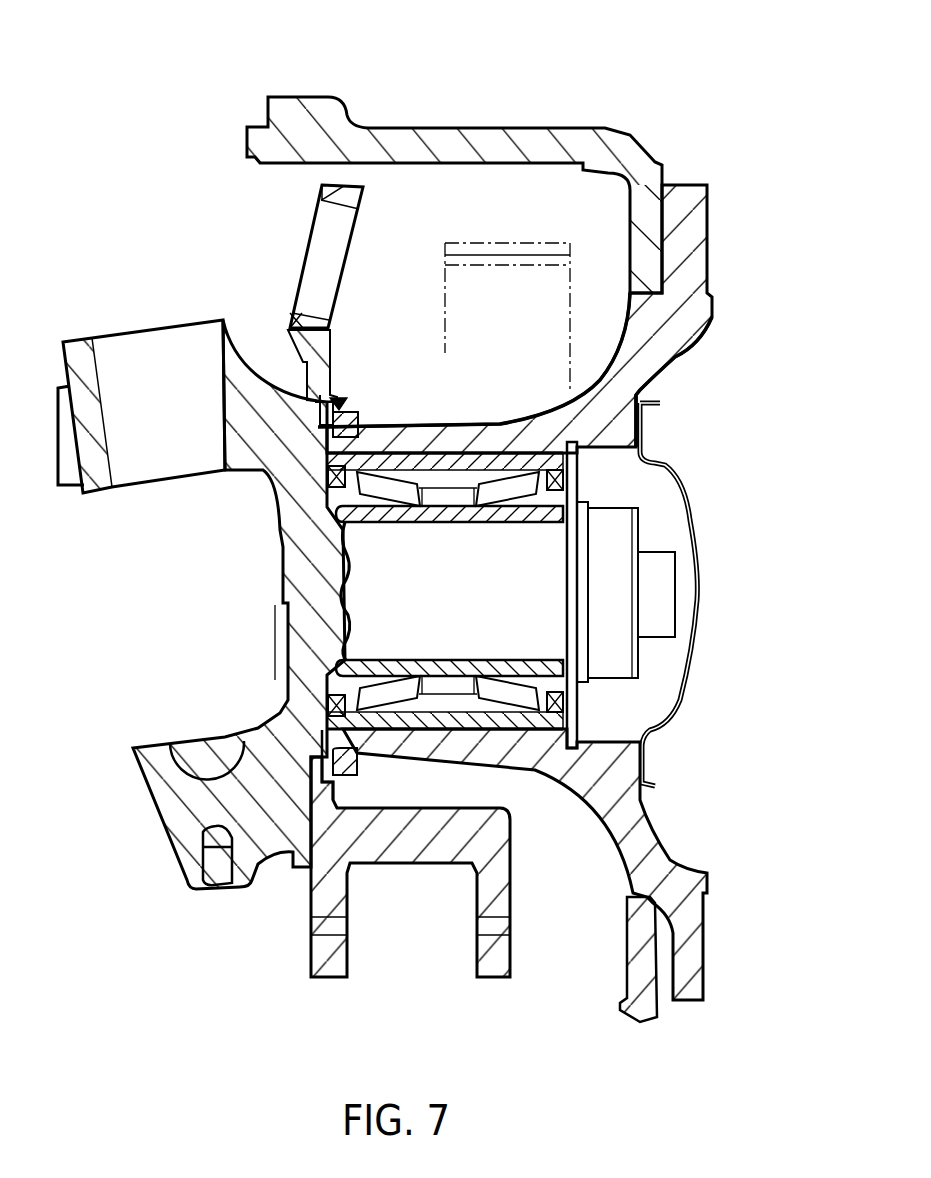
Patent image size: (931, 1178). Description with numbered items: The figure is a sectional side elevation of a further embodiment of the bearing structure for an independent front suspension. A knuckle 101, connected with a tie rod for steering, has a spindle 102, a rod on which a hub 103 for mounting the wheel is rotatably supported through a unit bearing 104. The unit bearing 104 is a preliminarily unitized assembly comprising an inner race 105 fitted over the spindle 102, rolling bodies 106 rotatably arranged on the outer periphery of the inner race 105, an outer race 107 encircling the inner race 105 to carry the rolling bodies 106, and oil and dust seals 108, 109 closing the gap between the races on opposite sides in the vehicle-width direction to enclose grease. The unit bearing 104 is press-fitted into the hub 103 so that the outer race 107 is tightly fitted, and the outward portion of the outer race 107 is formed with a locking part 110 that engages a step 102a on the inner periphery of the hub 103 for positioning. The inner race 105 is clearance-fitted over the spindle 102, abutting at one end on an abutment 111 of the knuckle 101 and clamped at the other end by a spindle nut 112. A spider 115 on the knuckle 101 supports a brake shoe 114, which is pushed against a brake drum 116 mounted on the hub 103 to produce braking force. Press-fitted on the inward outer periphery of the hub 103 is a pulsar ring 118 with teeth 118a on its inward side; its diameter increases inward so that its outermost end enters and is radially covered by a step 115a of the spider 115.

The knuckle 101 is at (233, 318).
The spindle 102 is at (500, 630).
The step 102a is at (547, 440).
The hub 103 is at (672, 359).
The unit bearing 104 is at (520, 458).
The inner race 105 is at (580, 493).
The rolling bodies 106 is at (380, 487).
The outer race 107 is at (452, 447).
The oil and dust seal 108 is at (578, 475).
The oil and dust seal 109 is at (340, 482).
The locking part 110 is at (640, 392).
The abutment 111 is at (340, 523).
The spindle nut 112 is at (657, 622).
The brake shoe 114 is at (450, 283).
The spider 115 is at (292, 318).
The step 115a is at (345, 405).
The brake drum 116 is at (492, 128).
The pulsar ring 118 is at (352, 425).
The teeth 118a is at (300, 397).